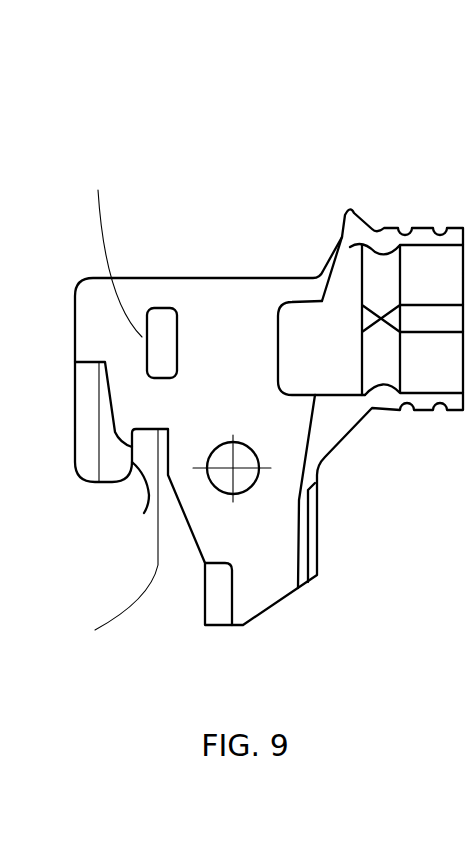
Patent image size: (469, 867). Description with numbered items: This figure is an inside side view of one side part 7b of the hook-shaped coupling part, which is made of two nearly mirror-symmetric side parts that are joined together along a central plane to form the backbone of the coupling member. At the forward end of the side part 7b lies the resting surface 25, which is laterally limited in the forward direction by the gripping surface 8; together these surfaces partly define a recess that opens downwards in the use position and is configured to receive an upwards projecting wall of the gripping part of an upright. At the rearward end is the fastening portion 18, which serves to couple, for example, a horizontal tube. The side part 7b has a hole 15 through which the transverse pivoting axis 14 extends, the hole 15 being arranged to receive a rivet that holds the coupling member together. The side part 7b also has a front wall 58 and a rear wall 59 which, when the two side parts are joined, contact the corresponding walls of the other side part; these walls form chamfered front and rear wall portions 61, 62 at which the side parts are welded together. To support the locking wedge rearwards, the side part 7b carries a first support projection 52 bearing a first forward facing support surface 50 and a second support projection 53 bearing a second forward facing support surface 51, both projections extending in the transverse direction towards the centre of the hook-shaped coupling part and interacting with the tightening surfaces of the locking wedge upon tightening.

The side part 7b is at (220, 126).
The first forward facing support surface 50 is at (116, 243).
The first support projection 52 is at (163, 330).
The fastening portion 18 is at (400, 227).
The rear wall 59 is at (345, 242).
The transverse pivoting axis 14 is at (236, 472).
The chamfered rear wall portion 62 is at (315, 555).
The hole 15 is at (240, 488).
The second support projection 53 is at (222, 608).
The second forward facing support surface 51 is at (207, 595).
The resting surface 25 is at (106, 540).
The gripping surface 8 is at (144, 513).
The front wall 58 is at (112, 468).
The chamfered front wall portion 61 is at (90, 443).